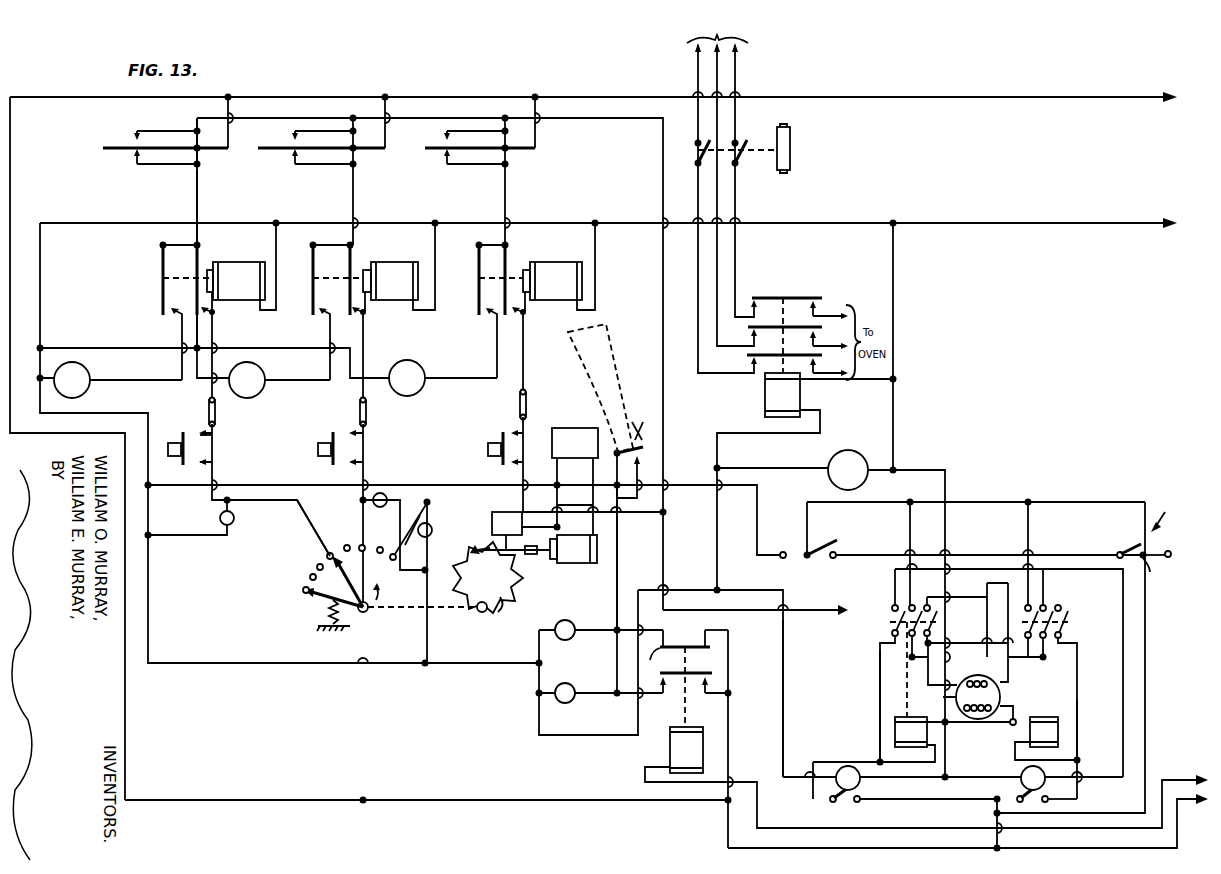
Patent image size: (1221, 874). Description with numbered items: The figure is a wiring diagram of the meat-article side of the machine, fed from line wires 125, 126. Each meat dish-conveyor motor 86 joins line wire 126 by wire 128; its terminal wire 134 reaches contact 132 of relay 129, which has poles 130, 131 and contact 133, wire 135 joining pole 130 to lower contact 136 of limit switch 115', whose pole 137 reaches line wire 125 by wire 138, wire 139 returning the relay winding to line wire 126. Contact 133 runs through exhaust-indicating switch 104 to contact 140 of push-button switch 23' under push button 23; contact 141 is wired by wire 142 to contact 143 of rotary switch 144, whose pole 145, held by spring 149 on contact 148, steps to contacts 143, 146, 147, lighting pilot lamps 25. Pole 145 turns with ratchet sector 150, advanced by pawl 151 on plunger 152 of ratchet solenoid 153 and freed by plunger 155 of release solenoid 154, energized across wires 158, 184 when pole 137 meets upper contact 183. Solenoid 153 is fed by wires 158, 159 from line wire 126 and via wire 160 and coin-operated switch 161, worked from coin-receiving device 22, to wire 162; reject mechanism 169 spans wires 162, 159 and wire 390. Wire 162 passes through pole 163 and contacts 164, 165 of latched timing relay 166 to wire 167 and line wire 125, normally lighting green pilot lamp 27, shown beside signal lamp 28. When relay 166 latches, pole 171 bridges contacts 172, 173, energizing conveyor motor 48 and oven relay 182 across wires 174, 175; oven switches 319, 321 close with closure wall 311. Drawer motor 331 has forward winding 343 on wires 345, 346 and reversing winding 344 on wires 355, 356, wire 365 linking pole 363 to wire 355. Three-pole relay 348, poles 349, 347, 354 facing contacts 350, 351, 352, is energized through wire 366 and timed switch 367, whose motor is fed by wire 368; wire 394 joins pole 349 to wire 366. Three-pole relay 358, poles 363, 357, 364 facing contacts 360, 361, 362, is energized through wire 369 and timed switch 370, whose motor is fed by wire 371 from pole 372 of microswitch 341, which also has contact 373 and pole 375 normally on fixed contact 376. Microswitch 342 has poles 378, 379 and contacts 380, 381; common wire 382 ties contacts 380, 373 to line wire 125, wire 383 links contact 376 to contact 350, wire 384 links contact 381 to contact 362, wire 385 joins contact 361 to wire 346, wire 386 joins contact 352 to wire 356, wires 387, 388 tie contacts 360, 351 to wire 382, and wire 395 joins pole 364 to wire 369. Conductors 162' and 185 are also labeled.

The coin-receiving device 22 is at (615, 355).
The meat-selecting push buttons 23 is at (328, 450).
The meat dish-selecting push-button switch 23' is at (376, 447).
The pilot lamps 25 is at (232, 526).
The pilot lamp 27 is at (573, 640).
The signal lamp 28 is at (580, 702).
The conveyor motor 48 is at (843, 450).
The meat dish-conveyor motors 86 is at (90, 390).
The product exhaust-indicating switch 104 is at (218, 413).
The switch assemblies 115' is at (228, 151).
The line wire 125 is at (571, 95).
The line wire 126 is at (922, 222).
The wires 128 is at (254, 350).
The relay 129 is at (244, 263).
The relay pole 130 is at (163, 263).
The relay pole 131 is at (200, 268).
The stationary contact 132 is at (170, 313).
The stationary contact 133 is at (218, 318).
The terminal wire 134 is at (156, 380).
The wire 135 is at (195, 201).
The lower contact 136 is at (134, 155).
The pole 137 is at (103, 149).
The wire 138 is at (230, 146).
The wire 139 is at (279, 283).
The stationary contact 140 is at (200, 434).
The stationary contact 141 is at (214, 462).
The wire 142 is at (210, 495).
The stationary contact 143 is at (326, 556).
The ratchet-operated rotary switch 144 is at (370, 615).
The rotary switch pole 145 is at (300, 598).
The stationary contact 146 is at (410, 530).
The stationary contact 147 is at (390, 560).
The first stationary contact 148 is at (303, 588).
The spring 149 is at (318, 618).
The ratchet disc sector 150 is at (488, 593).
The pawl member 151 is at (478, 546).
The plunger 152 is at (552, 562).
The ratchet solenoid 153 is at (577, 566).
The ratchet-release solenoid 154 is at (522, 514).
The plunger 155 is at (520, 545).
The wire 158 is at (560, 510).
The wire 159 is at (415, 485).
The wire 160 is at (632, 496).
The coin-operated switch 161 is at (633, 426).
The wire 162 is at (634, 565).
The conductor 162' is at (565, 671).
The relay pole 163 is at (678, 645).
The contact 164 is at (655, 660).
The contact 165 is at (716, 631).
The timing relay 166 is at (668, 752).
The wire 167 is at (730, 678).
The reject mechanism 169 is at (569, 428).
The pole 171 is at (698, 676).
The stationary contact 172 is at (665, 695).
The stationary contact 173 is at (704, 695).
The wire 174 is at (896, 410).
The wire 175 is at (716, 527).
The control relay 182 is at (763, 398).
The upper contact 183 is at (134, 136).
The wire 184 is at (412, 122).
The conductor 185 is at (858, 832).
The main vertical closure wall 311 is at (791, 150).
The oven control switch 319 is at (695, 153).
The oven control switch 321 is at (742, 160).
The sliding drawer-operating motor 331 is at (1000, 678).
The first microswitch assembly 341 is at (1169, 513).
The second microswitch assembly 342 is at (820, 540).
The forward winding 343 is at (975, 725).
The reversing winding 344 is at (968, 681).
The wire 345 is at (1003, 710).
The wire 346 is at (897, 669).
The pole 347 is at (904, 699).
The three-pole relay 348 is at (893, 735).
The pole 349 is at (893, 622).
The stationary contact 350 is at (892, 607).
The stationary contact 351 is at (913, 604).
The stationary contact 352 is at (956, 592).
The pole 354 is at (945, 625).
The wire 355 is at (932, 682).
The wire 356 is at (1001, 684).
The pole 357 is at (1065, 622).
The three-pole relay 358 is at (1060, 720).
The stationary contact 360 is at (1025, 606).
The stationary contact 361 is at (1046, 605).
The stationary contact 362 is at (1061, 606).
The pole 363 is at (1039, 624).
The pole 364 is at (1065, 633).
The wire 365 is at (955, 647).
The wire 366 is at (815, 762).
The timed switch 367 is at (833, 806).
The wire 368 is at (783, 695).
The wire 369 is at (1079, 777).
The timed switch 370 is at (1052, 803).
The wire 371 is at (1122, 683).
The pole 372 is at (1122, 550).
The contact 373 is at (1164, 575).
The second pole 375 is at (1158, 550).
The fixed contact 376 is at (1184, 547).
The pole 378 is at (787, 551).
The pole 379 is at (840, 553).
The stationary contact 380 is at (805, 558).
The stationary contact 381 is at (835, 560).
The common wire 382 is at (1058, 501).
The wire 383 is at (1076, 569).
The wire 384 is at (967, 553).
The wire 385 is at (1043, 567).
The wire 386 is at (998, 582).
The wire 387 is at (1028, 500).
The wire 388 is at (910, 504).
The wire 390 is at (690, 483).
The wire 394 is at (879, 684).
The wire 395 is at (1079, 675).